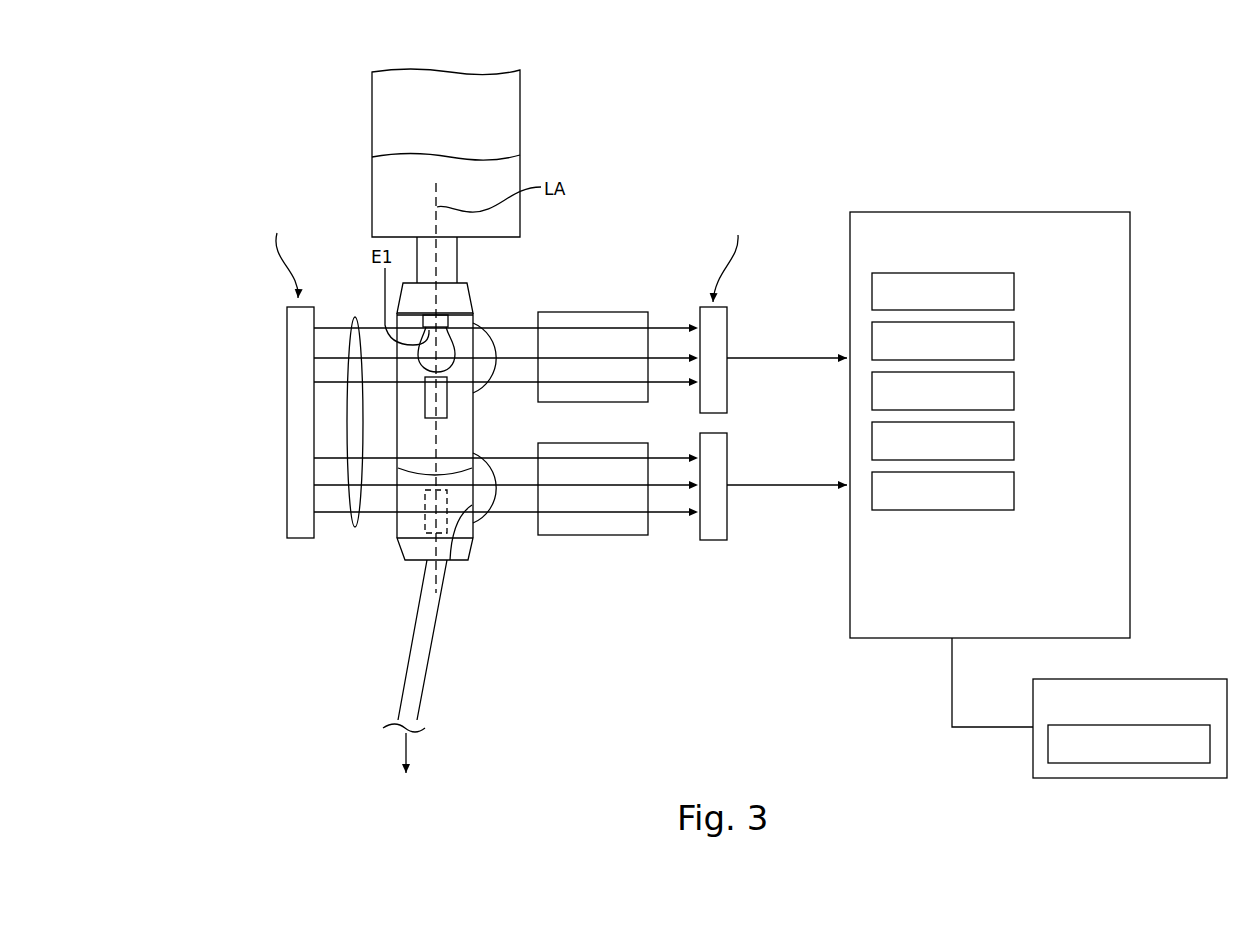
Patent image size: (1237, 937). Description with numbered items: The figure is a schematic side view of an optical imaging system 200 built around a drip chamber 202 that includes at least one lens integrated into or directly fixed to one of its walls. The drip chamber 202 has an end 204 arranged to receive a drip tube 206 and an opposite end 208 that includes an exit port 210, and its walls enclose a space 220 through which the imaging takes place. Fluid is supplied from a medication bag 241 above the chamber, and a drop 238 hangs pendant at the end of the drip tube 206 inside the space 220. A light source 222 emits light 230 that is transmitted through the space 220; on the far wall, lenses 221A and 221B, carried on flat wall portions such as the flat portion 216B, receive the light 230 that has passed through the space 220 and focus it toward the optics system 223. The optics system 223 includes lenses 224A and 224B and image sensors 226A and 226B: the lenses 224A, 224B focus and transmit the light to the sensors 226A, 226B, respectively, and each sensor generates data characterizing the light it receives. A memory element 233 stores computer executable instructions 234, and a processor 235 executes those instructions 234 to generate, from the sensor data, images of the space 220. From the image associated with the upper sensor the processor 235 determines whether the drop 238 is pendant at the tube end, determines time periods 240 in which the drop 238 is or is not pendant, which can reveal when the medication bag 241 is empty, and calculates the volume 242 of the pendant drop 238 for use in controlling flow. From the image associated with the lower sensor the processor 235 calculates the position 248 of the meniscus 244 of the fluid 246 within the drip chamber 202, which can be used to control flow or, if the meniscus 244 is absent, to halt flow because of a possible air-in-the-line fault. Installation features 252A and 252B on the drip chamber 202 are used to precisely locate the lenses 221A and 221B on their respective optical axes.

The optical imaging system 200 is at (694, 68).
The drip chamber 202 is at (369, 296).
The end 204 is at (479, 314).
The drip tube 206 is at (443, 316).
The end 208 is at (396, 549).
The exit port 210 is at (427, 562).
The flat portion 216B is at (443, 563).
The space 220 is at (410, 405).
The lens 221A is at (497, 370).
The lens 221B is at (497, 503).
The light source 222 is at (287, 335).
The optics system 223 is at (733, 143).
The lens 224A is at (593, 312).
The lens 224B is at (593, 535).
The image sensor 226A is at (728, 337).
The image sensor 226B is at (728, 465).
The light 230 is at (356, 317).
The memory element 233 is at (1147, 679).
The computer executable instructions 234 is at (1130, 763).
The processor 235 is at (988, 212).
The drop 238 is at (430, 362).
The time periods 240 is at (1014, 392).
The medication bag 241 is at (520, 115).
The volume 242 is at (1014, 442).
The meniscus 244 is at (453, 474).
The fluid 246 is at (410, 497).
The position 248 is at (1014, 492).
The installation feature 252A is at (425, 390).
The installation feature 252B is at (423, 518).